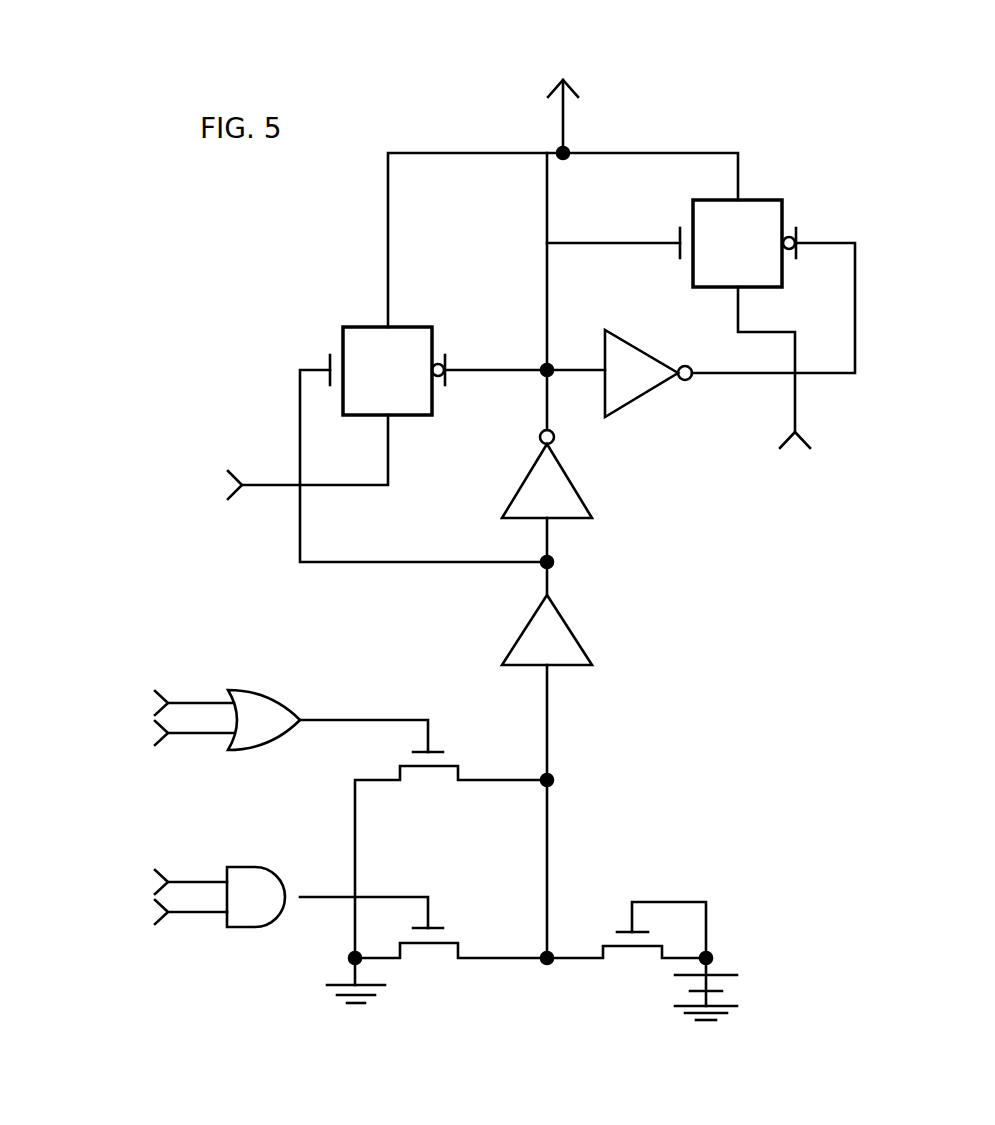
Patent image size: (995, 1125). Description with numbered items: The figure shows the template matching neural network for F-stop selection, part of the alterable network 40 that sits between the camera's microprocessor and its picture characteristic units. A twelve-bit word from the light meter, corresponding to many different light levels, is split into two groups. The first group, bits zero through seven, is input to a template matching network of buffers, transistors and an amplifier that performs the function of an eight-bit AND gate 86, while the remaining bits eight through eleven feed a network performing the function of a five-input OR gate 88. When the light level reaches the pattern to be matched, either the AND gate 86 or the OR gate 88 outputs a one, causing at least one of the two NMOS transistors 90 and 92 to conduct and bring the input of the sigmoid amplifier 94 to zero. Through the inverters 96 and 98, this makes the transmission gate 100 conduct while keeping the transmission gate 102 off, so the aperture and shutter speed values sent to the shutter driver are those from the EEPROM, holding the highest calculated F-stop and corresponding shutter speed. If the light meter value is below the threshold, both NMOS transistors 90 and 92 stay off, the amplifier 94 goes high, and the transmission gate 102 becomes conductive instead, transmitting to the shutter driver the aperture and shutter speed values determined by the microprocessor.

The alterable neural network 40 is at (666, 832).
The AND gate 86 is at (265, 868).
The OR gate 88 is at (258, 698).
The NMOS transistor 90 is at (436, 755).
The NMOS transistor 92 is at (440, 938).
The sigmoid amplifier 94 is at (532, 635).
The inverter 96 is at (557, 492).
The inverter 98 is at (655, 378).
The transmission gate 100 is at (705, 210).
The transmission gate 102 is at (368, 332).